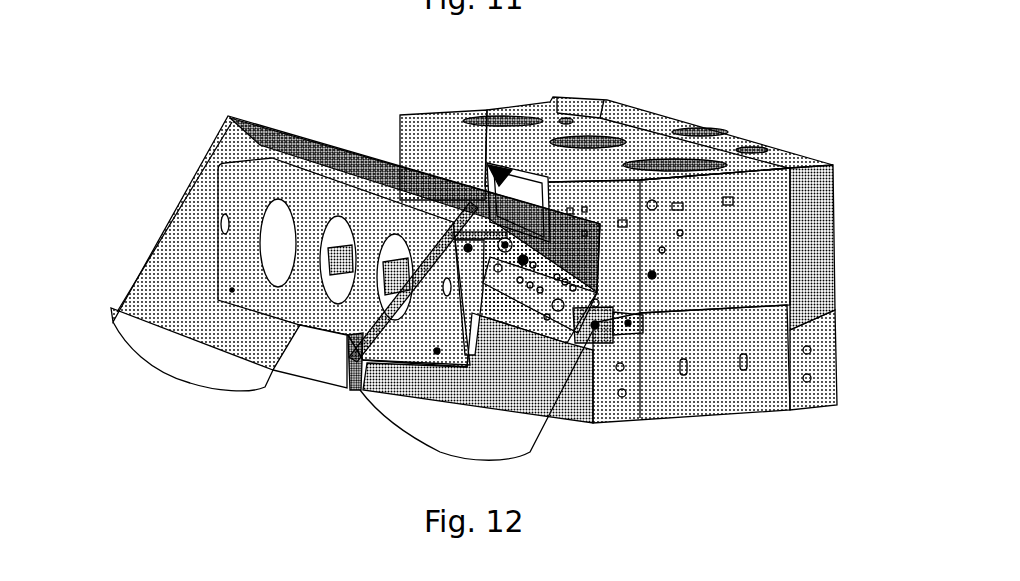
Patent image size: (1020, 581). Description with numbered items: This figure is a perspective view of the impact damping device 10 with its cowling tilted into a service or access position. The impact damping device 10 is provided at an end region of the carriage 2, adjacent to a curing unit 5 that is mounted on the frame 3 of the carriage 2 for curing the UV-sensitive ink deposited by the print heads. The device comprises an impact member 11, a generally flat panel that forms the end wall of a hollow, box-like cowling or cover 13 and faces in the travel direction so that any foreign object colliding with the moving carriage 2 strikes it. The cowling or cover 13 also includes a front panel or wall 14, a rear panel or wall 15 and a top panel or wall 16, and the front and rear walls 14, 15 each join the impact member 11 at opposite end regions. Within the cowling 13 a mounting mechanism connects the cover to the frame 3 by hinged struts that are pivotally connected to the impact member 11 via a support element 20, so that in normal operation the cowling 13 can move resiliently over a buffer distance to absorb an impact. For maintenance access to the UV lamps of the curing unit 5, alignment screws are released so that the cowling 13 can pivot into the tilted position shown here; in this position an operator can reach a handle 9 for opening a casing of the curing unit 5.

The carriage 2 is at (815, 140).
The frame 3 is at (662, 405).
The curing unit 5 is at (728, 279).
The handle 9 is at (487, 163).
The impact damping device 10 is at (308, 78).
The impact member 11 is at (305, 372).
The cowling or cover 13 is at (195, 150).
The front panel or wall 14 is at (447, 440).
The rear panel or wall 15 is at (182, 373).
The top panel or wall 16 is at (297, 132).
The support element 20 is at (348, 336).